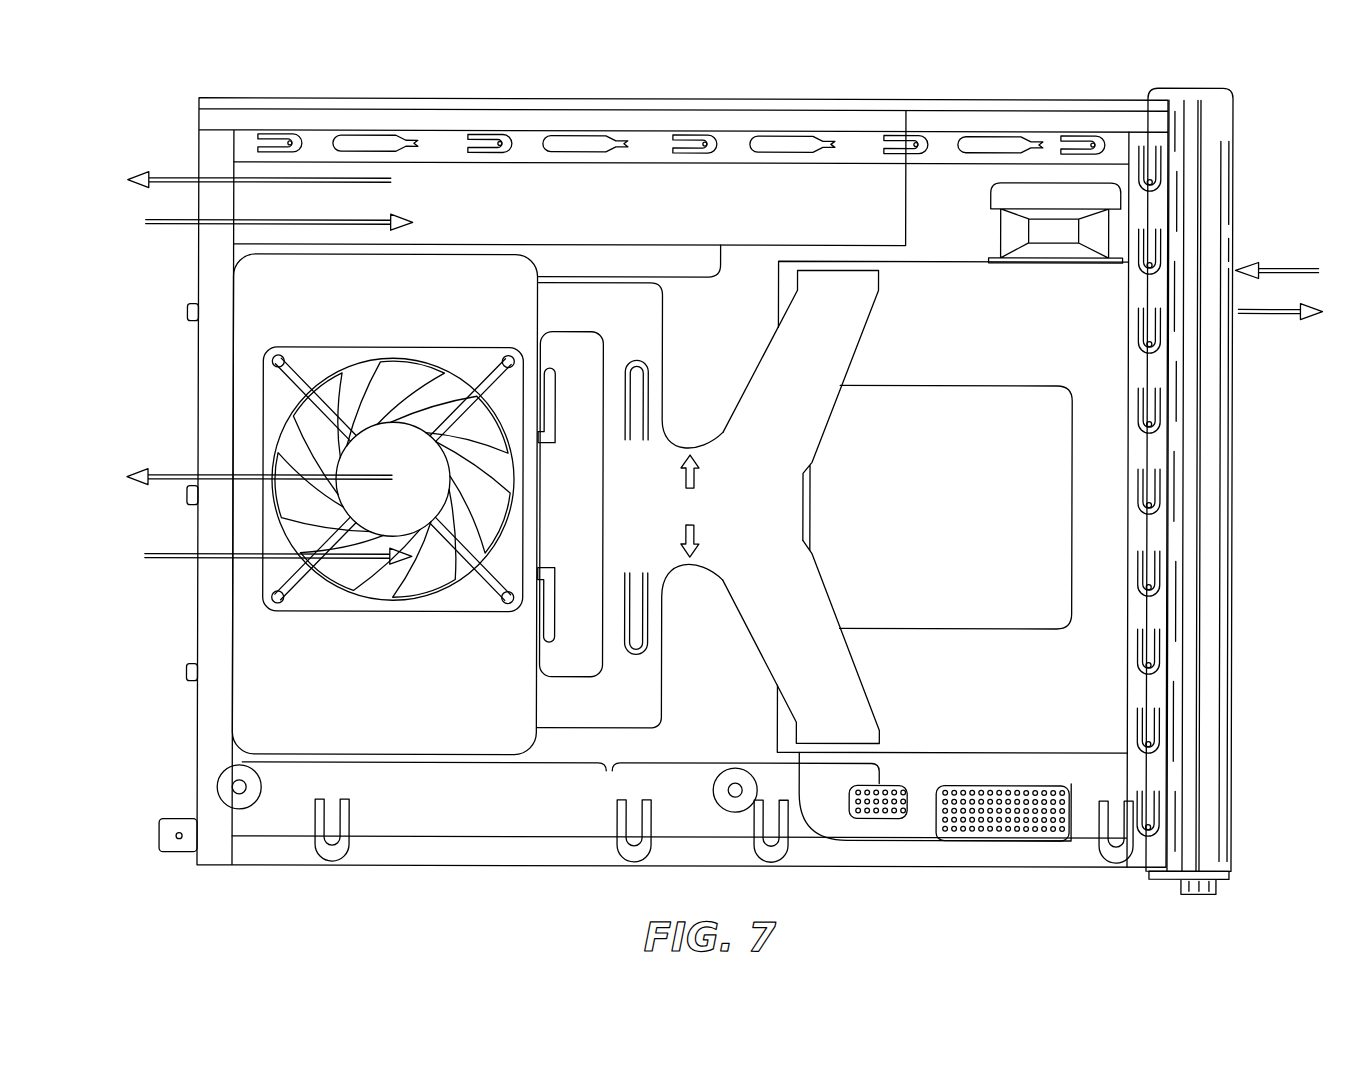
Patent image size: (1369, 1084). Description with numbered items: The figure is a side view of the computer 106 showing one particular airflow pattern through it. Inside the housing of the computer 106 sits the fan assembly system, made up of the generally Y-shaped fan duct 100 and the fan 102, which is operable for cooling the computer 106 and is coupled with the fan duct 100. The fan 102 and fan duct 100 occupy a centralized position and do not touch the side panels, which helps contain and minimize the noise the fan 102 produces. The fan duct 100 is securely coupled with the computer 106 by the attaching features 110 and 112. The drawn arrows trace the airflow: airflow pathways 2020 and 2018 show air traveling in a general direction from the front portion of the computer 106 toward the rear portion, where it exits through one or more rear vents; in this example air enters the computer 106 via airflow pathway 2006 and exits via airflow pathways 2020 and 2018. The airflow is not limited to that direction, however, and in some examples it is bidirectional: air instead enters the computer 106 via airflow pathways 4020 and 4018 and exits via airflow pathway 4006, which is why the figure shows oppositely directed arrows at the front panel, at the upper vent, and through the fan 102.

The fan duct 100 is at (610, 773).
The fan 102 is at (318, 567).
The computer 106 is at (985, 99).
The attaching feature 110 is at (833, 287).
The attaching feature 112 is at (835, 730).
The airflow pathway 2006 is at (1272, 268).
The airflow pathway 4006 is at (1257, 313).
The airflow pathway 2018 is at (167, 482).
The airflow pathway 4018 is at (167, 560).
The airflow pathway 2020 is at (167, 185).
The airflow pathway 4020 is at (167, 226).